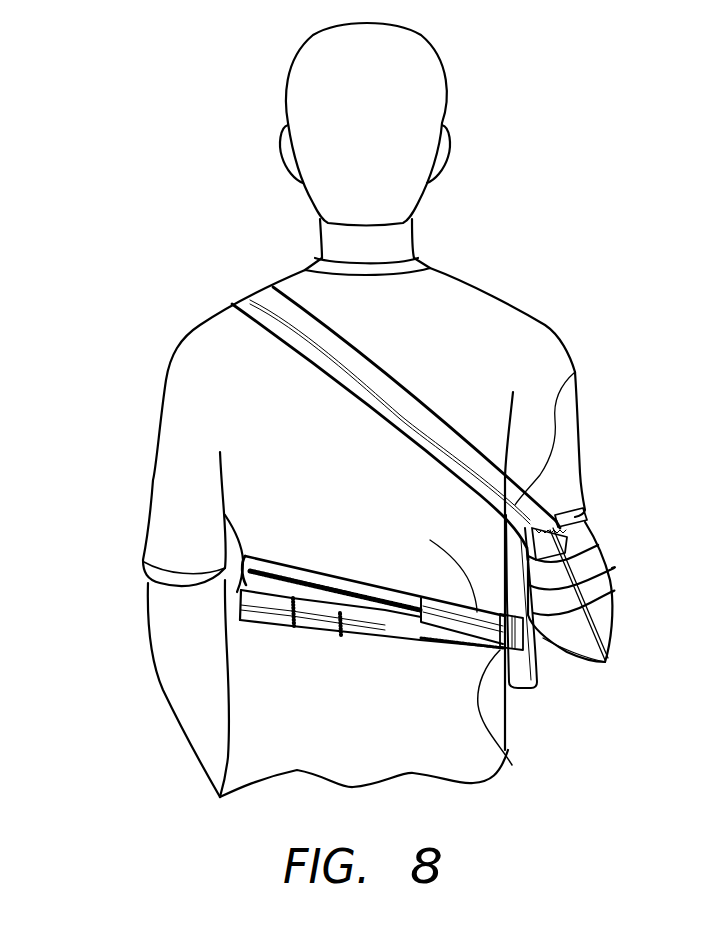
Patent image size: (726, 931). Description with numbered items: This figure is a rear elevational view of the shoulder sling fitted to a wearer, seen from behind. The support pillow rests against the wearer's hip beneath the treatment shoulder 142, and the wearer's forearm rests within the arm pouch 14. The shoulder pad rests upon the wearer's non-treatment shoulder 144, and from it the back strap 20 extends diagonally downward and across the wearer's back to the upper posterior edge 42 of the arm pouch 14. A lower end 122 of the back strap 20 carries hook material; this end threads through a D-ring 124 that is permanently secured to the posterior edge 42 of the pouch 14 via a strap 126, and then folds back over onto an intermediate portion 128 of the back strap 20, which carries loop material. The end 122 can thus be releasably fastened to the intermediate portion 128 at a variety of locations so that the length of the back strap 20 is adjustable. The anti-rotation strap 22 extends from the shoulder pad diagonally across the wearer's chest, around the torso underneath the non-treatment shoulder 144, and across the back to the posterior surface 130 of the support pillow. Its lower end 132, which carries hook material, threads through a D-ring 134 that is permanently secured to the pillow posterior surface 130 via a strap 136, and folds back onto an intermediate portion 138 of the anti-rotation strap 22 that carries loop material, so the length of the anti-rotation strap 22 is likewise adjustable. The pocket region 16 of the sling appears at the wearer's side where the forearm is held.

The arm pouch 14 is at (605, 566).
The forearm pocket 16 is at (277, 618).
The back strap 20 is at (293, 333).
The anti-rotation strap 22 is at (363, 605).
The posterior edge 42 is at (592, 622).
The lower end 122 is at (522, 492).
The D-ring 124 is at (580, 512).
The strap 126 is at (590, 548).
The intermediate portion 128 is at (573, 370).
The posterior surface 130 is at (523, 677).
The lower end 132 is at (457, 627).
The D-ring 134 is at (512, 765).
The strap 136 is at (520, 642).
The intermediate portion 138 is at (430, 540).
The treatment shoulder 142 is at (530, 340).
The non-treatment shoulder 144 is at (223, 330).